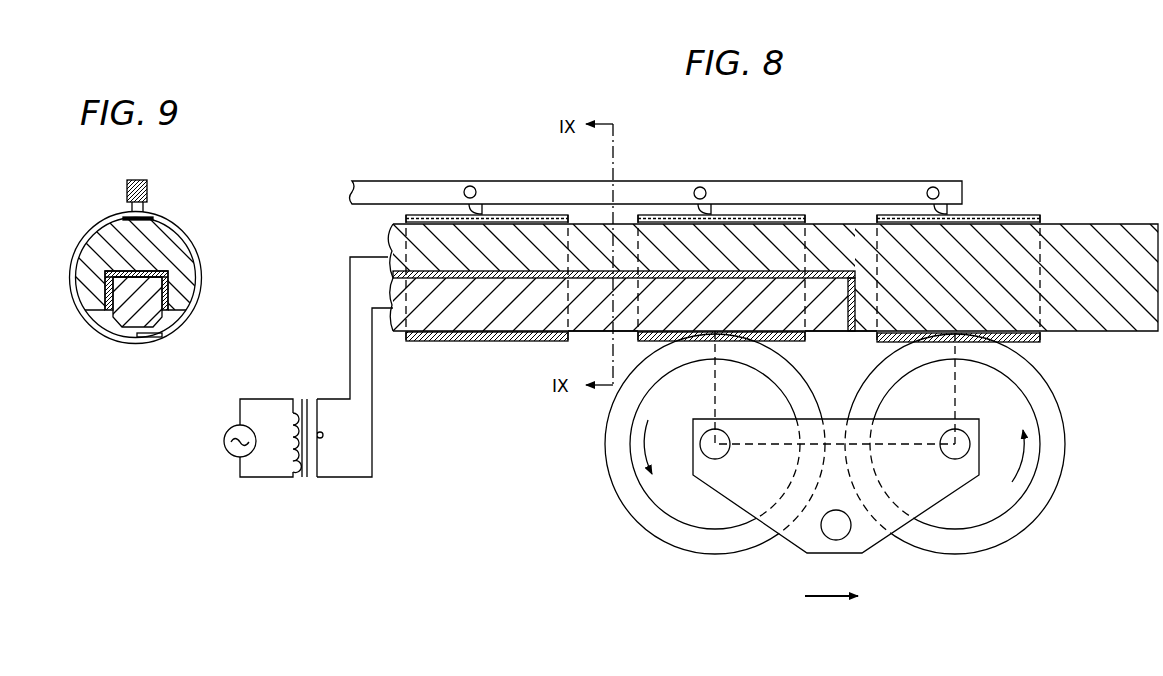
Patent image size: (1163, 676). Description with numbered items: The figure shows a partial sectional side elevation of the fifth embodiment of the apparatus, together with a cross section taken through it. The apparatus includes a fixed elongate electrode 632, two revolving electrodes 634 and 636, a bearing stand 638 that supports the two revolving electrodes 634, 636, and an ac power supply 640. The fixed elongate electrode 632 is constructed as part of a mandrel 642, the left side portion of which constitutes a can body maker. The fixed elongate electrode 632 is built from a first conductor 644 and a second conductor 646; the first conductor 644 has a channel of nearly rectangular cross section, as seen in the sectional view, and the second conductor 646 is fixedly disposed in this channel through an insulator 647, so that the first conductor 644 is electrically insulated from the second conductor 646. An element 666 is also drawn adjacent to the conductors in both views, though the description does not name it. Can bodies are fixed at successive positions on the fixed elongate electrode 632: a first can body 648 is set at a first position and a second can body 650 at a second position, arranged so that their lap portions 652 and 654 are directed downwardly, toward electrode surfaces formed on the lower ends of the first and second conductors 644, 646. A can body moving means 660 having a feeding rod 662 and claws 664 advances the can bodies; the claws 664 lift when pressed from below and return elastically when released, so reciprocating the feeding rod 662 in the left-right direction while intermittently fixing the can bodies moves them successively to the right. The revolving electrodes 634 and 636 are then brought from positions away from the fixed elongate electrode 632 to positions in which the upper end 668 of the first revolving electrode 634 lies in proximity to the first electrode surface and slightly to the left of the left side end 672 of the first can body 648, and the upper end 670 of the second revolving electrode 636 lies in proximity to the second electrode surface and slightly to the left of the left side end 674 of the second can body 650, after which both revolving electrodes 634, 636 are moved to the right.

In FIG. 8, the fixed elongate electrode 632 is at (1131, 222).
In FIG. 8, the first revolving electrode 634 is at (1041, 498).
In FIG. 8, the second revolving electrode 636 is at (674, 535).
In FIG. 8, the bearing stand 638 is at (882, 548).
In FIG. 8, the ac power supply 640 is at (230, 456).
In FIG. 8, the mandrel 642 is at (381, 232).
In FIG. 9, the mandrel 642 is at (196, 309).
In FIG. 8, the first conductor 644 is at (1140, 333).
In FIG. 9, the first conductor 644 is at (194, 256).
In FIG. 8, the second conductor 646 is at (571, 342).
In FIG. 9, the second conductor 646 is at (157, 322).
In FIG. 8, the insulator 647 is at (391, 274).
In FIG. 9, the insulator 647 is at (170, 290).
In FIG. 8, the first can body 648 is at (1031, 216).
In FIG. 8, the second can body 650 is at (801, 214).
In FIG. 8, the lap portion 652 is at (1040, 340).
In FIG. 8, the lap portion 654 is at (786, 342).
In FIG. 8, the can body moving means 660 is at (668, 179).
In FIG. 8, the feeding rod 662 is at (779, 190).
In FIG. 9, the feeding rod 662 is at (147, 190).
In FIG. 8, the claws 664 is at (941, 206).
In FIG. 9, the claws 664 is at (143, 210).
In FIG. 8, the electrode pad 666 is at (527, 214).
In FIG. 9, the electrode pad 666 is at (112, 337).
In FIG. 8, the upper end 668 is at (956, 341).
In FIG. 8, the upper end 670 is at (713, 341).
In FIG. 8, the left side end 672 is at (876, 334).
In FIG. 8, the left side end 674 is at (632, 332).